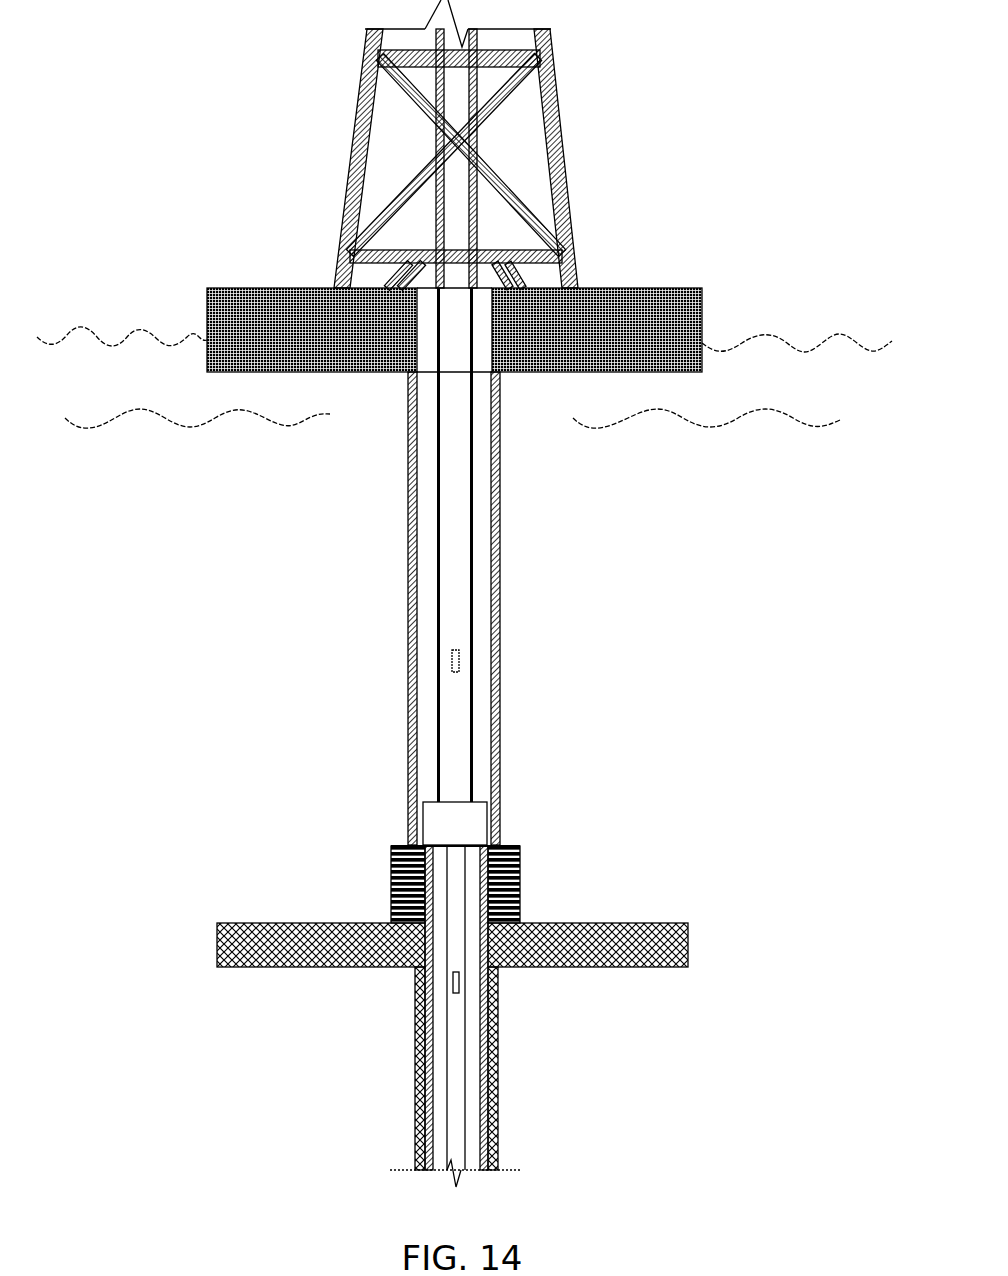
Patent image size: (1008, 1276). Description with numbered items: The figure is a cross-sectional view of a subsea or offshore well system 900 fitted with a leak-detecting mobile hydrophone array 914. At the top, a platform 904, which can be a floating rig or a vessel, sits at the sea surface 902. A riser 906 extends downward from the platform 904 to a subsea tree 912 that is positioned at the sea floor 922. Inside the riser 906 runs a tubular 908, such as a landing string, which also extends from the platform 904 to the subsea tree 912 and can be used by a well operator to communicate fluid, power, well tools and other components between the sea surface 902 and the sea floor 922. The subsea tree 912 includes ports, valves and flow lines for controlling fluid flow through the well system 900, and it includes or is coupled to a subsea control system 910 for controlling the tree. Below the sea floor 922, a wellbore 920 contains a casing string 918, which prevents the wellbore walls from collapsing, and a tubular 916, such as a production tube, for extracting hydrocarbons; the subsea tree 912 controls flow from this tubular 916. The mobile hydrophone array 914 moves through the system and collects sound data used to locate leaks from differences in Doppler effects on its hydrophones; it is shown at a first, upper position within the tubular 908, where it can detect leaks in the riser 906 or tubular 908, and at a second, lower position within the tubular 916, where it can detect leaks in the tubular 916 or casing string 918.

The well system 900 is at (708, 88).
The sea surface 902 is at (790, 335).
The platform 904 is at (641, 284).
The riser 906 is at (502, 592).
The tubular 908 is at (476, 621).
The subsea control system 910 is at (471, 806).
The subsea tree 912 is at (524, 866).
The leak-detecting mobile hydrophone array 914 is at (463, 662).
The tubular 916 is at (467, 1141).
The casing string 918 is at (423, 993).
The wellbore 920 is at (424, 1148).
The sea floor 922 is at (684, 920).